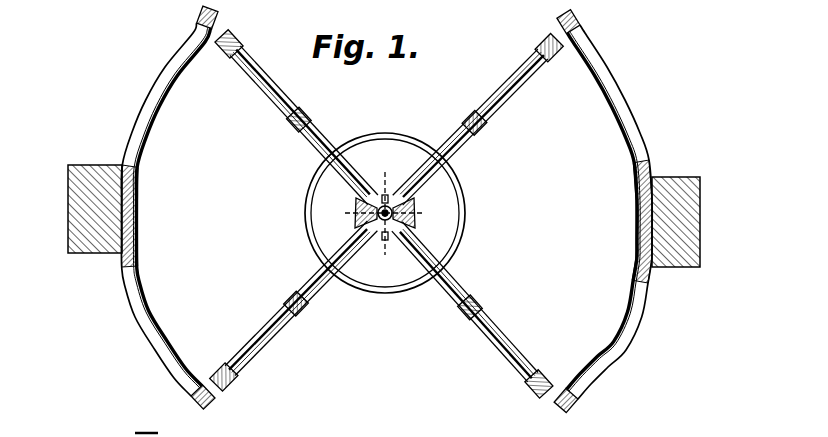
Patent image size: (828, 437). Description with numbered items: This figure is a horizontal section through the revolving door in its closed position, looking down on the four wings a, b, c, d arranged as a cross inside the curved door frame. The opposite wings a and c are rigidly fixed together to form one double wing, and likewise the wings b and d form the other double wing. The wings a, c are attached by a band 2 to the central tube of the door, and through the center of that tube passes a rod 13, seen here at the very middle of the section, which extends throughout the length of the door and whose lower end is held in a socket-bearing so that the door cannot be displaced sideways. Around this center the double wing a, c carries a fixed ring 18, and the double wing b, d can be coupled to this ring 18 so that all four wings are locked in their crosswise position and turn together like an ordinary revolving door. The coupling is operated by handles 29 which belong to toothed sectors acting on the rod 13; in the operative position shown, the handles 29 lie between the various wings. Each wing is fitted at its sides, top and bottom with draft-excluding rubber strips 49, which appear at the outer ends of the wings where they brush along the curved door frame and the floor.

The draft excluding rubber strips 49 is at (221, 28).
The fixed ring 18 is at (465, 210).
The rod 13 is at (380, 230).
The handle 29 is at (403, 163).
The wing a is at (276, 101).
The wing b is at (497, 112).
The wing c is at (480, 306).
The wing d is at (291, 317).
The band 2 is at (515, 68).